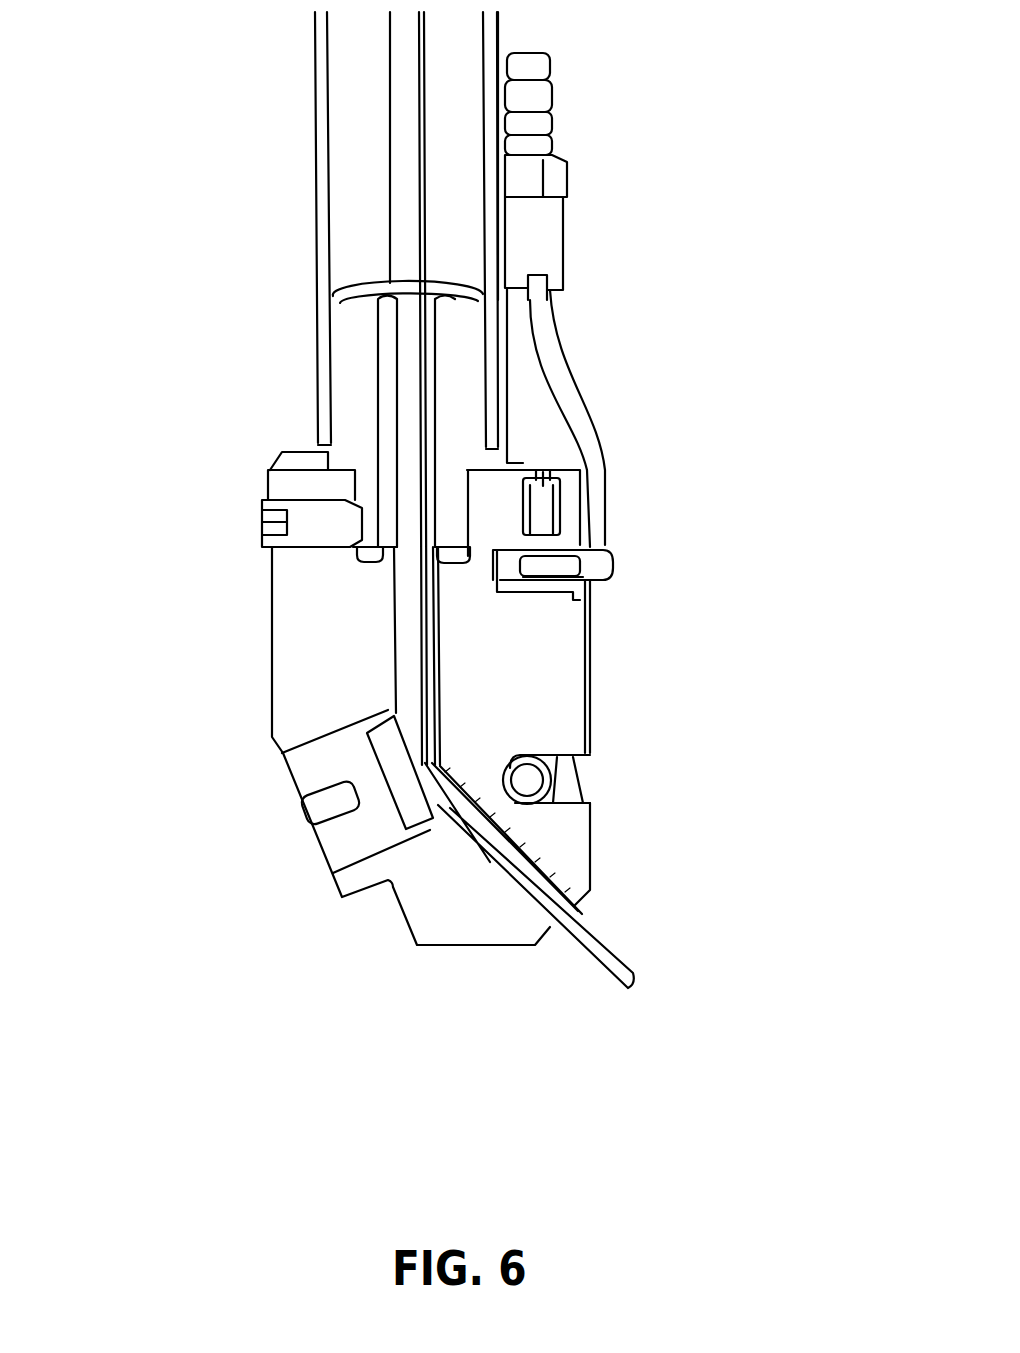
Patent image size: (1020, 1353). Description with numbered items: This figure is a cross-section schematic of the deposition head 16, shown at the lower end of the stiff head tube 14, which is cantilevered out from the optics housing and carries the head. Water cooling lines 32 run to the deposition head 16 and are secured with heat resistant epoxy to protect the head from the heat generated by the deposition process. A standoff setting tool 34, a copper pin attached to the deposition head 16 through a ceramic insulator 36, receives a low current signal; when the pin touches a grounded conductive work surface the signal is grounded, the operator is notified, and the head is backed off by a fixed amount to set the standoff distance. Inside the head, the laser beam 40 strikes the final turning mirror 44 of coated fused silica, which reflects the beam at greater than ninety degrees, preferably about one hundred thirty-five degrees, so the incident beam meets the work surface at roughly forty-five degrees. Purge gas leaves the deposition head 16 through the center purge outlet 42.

The head tube 14 is at (355, 113).
The deposition head 16 is at (320, 638).
The water cooling lines 32 is at (527, 780).
The standoff setting tool 34 is at (617, 563).
The ceramic insulator 36 is at (547, 540).
The laser beam 40 is at (615, 955).
The center purge outlet 42 is at (552, 927).
The final turning mirror 44 is at (398, 778).